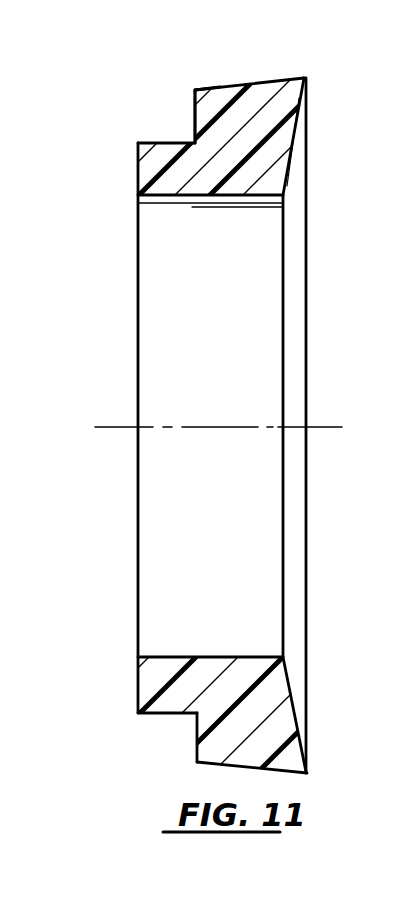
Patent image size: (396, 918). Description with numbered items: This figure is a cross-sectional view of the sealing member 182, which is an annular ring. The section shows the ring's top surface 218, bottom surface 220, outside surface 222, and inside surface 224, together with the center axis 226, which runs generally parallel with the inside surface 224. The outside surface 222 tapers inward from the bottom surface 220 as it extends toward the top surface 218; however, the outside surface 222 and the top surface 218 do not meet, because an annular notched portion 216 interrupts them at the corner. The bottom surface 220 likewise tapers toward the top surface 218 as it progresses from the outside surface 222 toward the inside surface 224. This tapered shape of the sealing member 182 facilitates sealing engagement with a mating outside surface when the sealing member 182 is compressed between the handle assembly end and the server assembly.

The sealing member 182 is at (213, 85).
The annular notched portion 216 is at (193, 141).
The top surface 218 is at (137, 163).
The bottom surface 220 is at (300, 279).
The outside surface 222 is at (250, 85).
The inside surface 224 is at (178, 199).
The center axis 226 is at (110, 425).